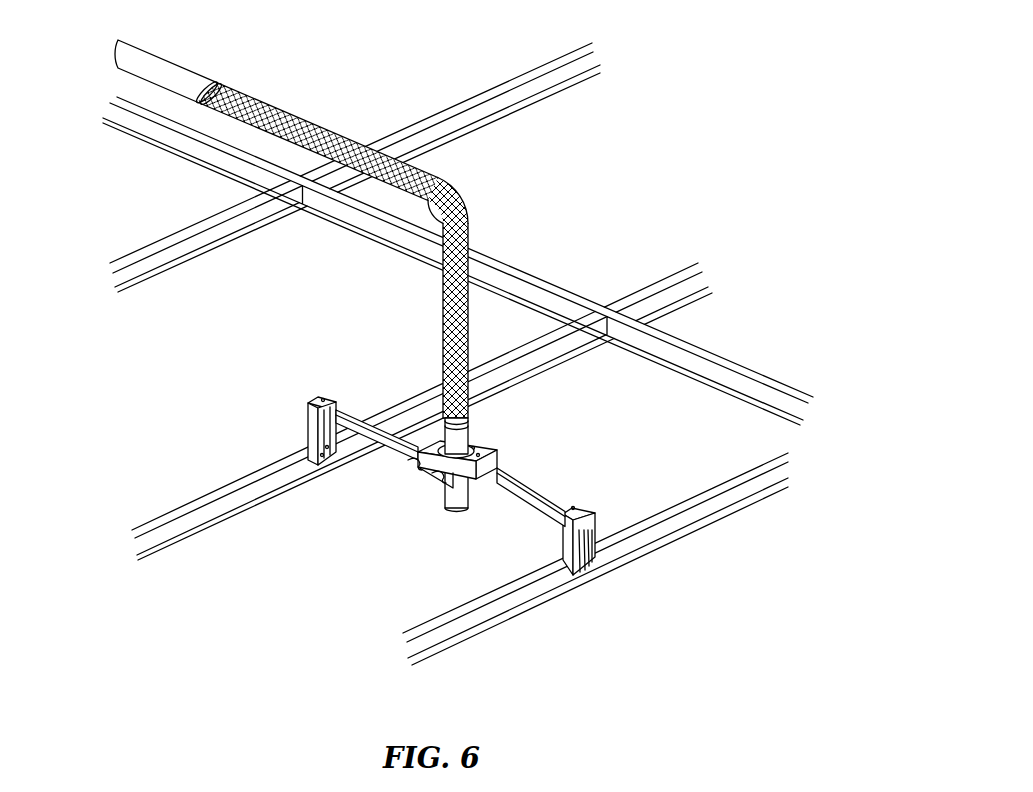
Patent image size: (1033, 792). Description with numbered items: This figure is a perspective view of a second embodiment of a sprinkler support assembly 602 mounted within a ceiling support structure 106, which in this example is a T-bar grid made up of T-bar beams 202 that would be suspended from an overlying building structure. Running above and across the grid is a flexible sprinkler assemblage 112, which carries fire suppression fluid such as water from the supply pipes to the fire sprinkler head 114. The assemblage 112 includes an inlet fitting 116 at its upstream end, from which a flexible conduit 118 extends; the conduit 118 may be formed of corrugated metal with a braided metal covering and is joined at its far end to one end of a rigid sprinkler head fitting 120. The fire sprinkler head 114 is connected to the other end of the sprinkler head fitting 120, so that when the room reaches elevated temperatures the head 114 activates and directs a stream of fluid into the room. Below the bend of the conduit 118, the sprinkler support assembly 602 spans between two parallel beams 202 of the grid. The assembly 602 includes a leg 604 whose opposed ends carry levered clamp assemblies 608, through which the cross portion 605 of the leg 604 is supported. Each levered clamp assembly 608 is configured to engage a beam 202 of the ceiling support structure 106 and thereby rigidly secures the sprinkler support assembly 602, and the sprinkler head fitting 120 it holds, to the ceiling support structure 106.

The ceiling support structure 106 is at (458, 354).
The T-bar beam 202 is at (517, 108).
The inlet fitting 116 is at (216, 81).
The flexible sprinkler assemblage 112 is at (366, 248).
The flexible conduit 118 is at (459, 193).
The sprinkler head fitting 120 is at (464, 432).
The fire sprinkler head 114 is at (458, 512).
The sprinkler support assembly 602 is at (446, 498).
The leg 604 is at (390, 448).
The cross portion 605 is at (562, 486).
The levered clamp assembly 608 is at (304, 406).